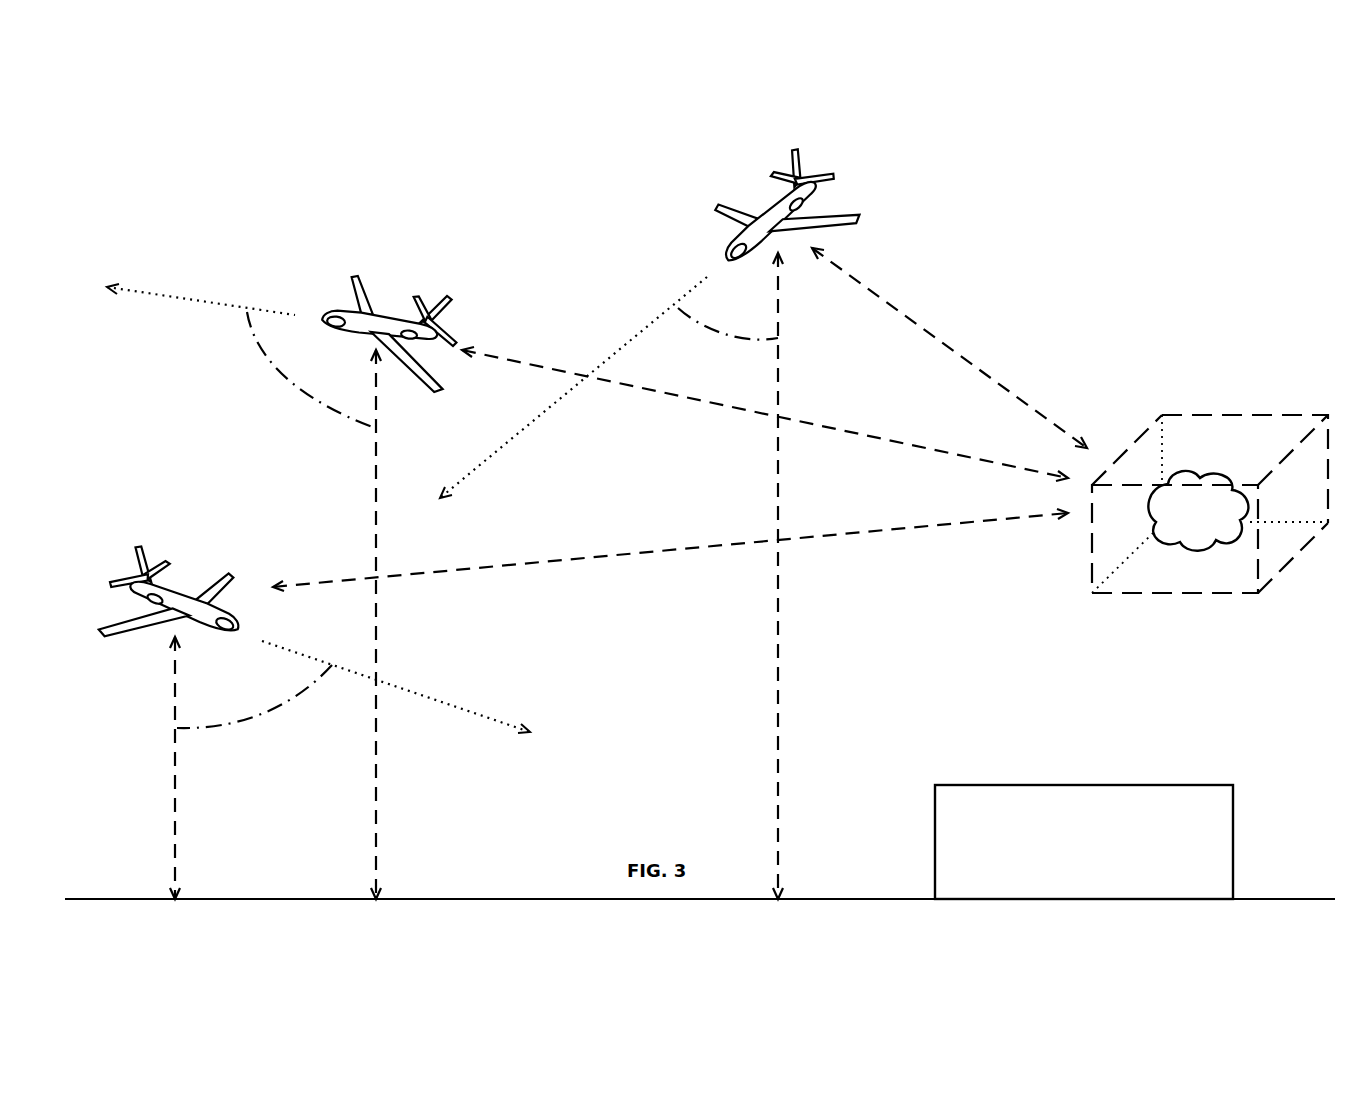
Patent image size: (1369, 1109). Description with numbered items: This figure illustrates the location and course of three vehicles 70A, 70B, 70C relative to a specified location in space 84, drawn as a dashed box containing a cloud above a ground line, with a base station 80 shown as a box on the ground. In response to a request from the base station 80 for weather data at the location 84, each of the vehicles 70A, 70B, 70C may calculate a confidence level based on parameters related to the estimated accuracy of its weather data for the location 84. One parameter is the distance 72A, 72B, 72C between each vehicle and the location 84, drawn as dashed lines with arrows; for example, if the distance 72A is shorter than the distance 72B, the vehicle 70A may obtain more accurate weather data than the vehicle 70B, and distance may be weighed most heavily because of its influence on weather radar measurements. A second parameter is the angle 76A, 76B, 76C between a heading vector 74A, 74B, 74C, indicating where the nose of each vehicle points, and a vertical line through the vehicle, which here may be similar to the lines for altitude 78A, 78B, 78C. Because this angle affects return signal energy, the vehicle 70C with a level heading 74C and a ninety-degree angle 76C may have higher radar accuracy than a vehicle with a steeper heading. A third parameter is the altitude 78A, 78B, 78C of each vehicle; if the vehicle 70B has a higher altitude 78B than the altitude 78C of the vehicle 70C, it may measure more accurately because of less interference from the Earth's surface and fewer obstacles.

The vehicle 70A is at (430, 265).
The vehicle 70B is at (880, 198).
The vehicle 70C is at (148, 550).
The distance 72A is at (838, 430).
The distance 72B is at (978, 368).
The distance 72C is at (656, 550).
The heading vector 74A is at (148, 292).
The heading vector 74B is at (647, 327).
The heading vector 74C is at (408, 688).
The angle 76A is at (288, 393).
The angle 76B is at (763, 340).
The angle 76C is at (257, 712).
The altitude 78A is at (376, 800).
The altitude 78B is at (783, 733).
The altitude 78C is at (175, 800).
The base station 80 is at (1084, 842).
The specified location in space 84 is at (1110, 637).